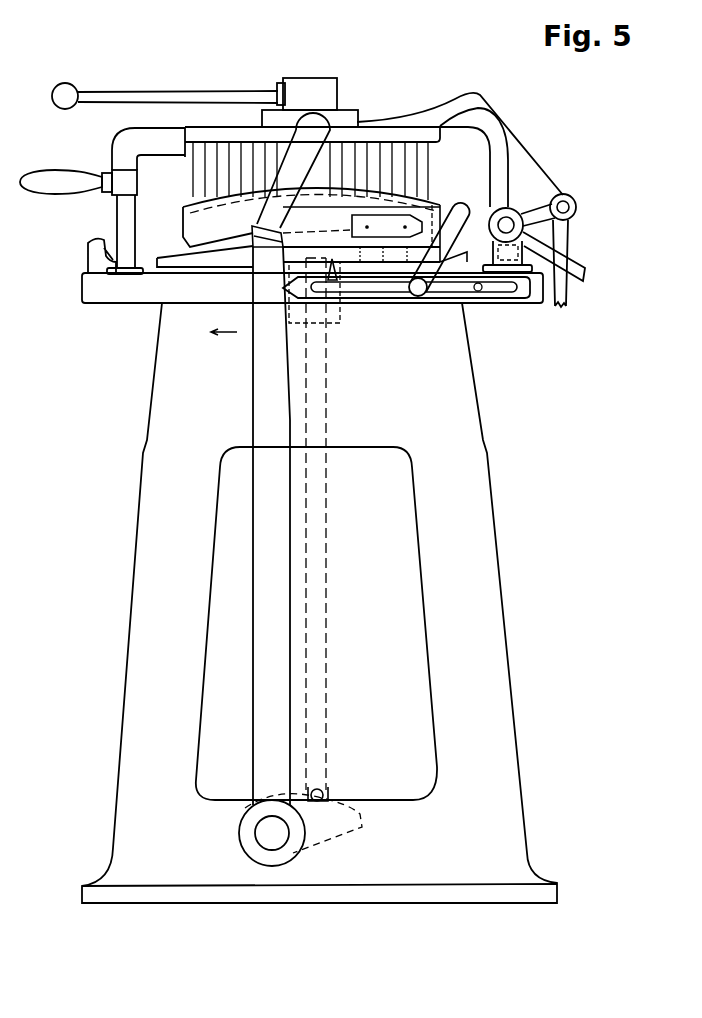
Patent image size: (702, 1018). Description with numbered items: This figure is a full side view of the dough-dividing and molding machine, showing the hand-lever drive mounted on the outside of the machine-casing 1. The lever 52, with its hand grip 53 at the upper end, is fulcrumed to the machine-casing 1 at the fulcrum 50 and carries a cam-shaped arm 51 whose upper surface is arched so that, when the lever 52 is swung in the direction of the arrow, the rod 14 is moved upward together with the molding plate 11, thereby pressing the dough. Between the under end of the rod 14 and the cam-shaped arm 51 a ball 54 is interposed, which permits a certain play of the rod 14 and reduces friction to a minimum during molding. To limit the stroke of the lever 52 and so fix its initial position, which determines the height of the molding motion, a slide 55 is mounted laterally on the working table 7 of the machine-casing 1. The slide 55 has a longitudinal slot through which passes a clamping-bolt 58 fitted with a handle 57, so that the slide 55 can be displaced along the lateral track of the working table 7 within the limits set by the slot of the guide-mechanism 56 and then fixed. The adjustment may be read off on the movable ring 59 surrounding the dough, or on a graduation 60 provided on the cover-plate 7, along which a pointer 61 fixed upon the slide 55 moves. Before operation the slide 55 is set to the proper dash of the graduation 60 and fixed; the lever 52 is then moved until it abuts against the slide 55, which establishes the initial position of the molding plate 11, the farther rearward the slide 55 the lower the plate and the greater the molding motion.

The machine-casing 1 is at (465, 398).
The working table 7 is at (91, 290).
The molding plate 11 is at (167, 259).
The rod 14 is at (320, 395).
The fulcrum of the hand-lever 50 is at (272, 840).
The cam-shaped arm 51 is at (353, 825).
The lever 52 is at (262, 397).
The hand lever handle 53 is at (318, 123).
The ball 54 is at (325, 790).
The slide 55 is at (527, 294).
The guide-mechanism 56 is at (500, 289).
The handle 57 is at (465, 212).
The clamping-bolt 58 is at (415, 297).
The movable ring 59 is at (440, 204).
The graduation 60 is at (333, 252).
The pointer 61 is at (337, 275).